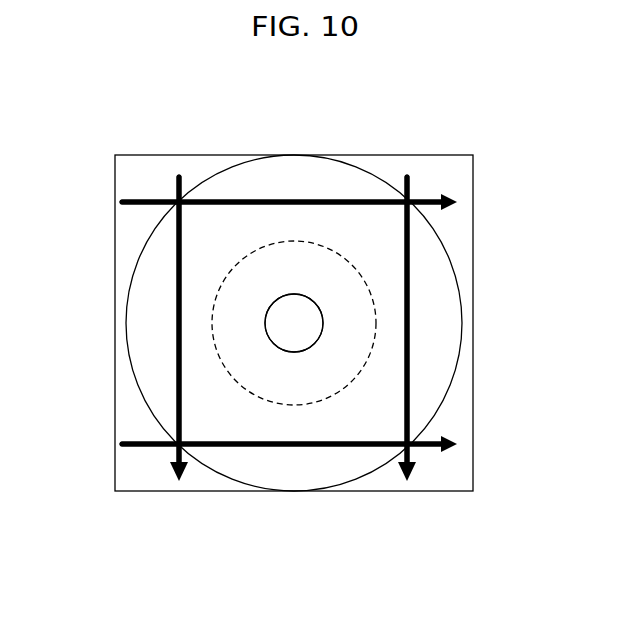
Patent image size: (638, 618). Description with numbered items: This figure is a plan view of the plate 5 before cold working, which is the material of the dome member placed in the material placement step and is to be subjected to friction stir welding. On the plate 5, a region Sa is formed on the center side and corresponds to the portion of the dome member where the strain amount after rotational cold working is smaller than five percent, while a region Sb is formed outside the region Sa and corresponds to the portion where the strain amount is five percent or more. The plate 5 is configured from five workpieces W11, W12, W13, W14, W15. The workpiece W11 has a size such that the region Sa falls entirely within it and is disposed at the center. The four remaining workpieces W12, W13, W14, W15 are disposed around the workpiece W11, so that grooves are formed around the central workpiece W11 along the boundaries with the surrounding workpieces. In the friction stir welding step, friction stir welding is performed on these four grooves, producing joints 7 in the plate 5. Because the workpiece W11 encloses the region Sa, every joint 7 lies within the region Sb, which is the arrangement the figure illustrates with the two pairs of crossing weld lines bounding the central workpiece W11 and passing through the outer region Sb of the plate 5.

The plate 5 is at (432, 155).
The joint 7 is at (142, 195).
The region Sa is at (285, 262).
The region Sb is at (327, 190).
The workpiece W11 is at (228, 408).
The workpiece W12 is at (114, 320).
The workpiece W13 is at (473, 312).
The workpiece W14 is at (473, 178).
The workpiece W15 is at (473, 462).